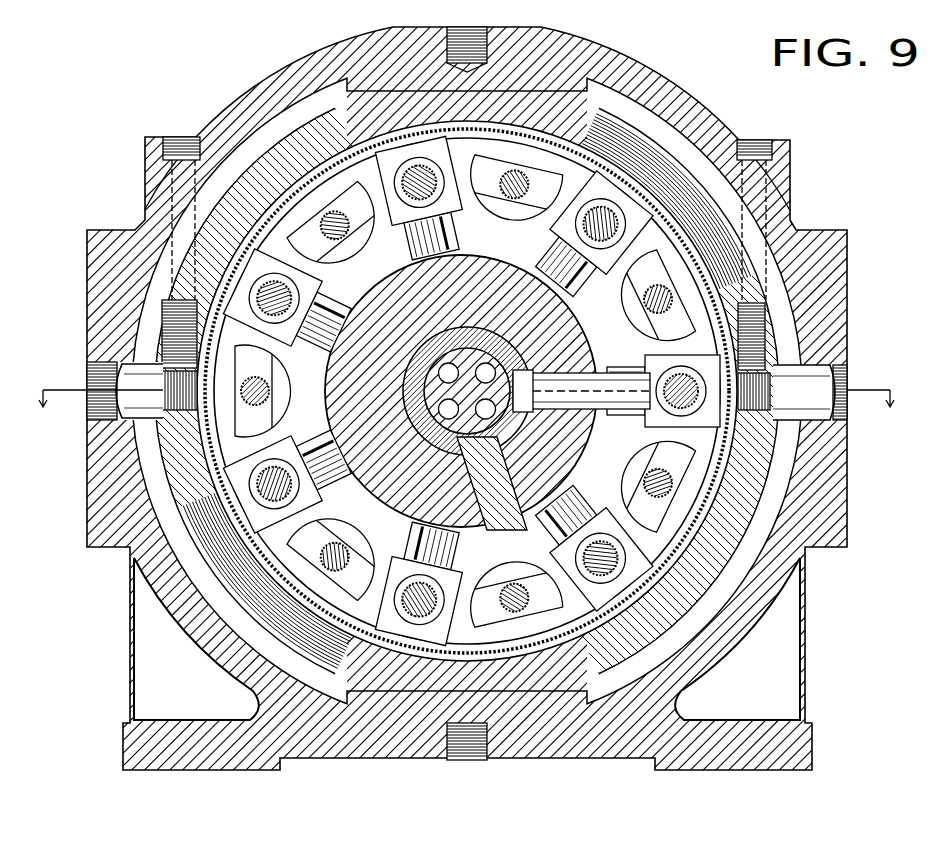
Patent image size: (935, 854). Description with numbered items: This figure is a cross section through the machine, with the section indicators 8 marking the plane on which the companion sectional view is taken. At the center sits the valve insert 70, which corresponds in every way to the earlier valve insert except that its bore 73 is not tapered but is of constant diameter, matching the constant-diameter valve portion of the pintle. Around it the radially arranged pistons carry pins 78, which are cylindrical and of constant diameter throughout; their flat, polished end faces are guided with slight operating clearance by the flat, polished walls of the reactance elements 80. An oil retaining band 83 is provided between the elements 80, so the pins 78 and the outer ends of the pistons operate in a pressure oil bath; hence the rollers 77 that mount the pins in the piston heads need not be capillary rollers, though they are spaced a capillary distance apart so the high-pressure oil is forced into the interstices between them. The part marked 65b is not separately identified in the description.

The oil retaining band 83 is at (592, 172).
The reactance elements 80 is at (612, 192).
The pins 78 is at (630, 214).
The rollers 77 is at (648, 222).
The valve insert 70 is at (581, 391).
The bore 73 is at (498, 505).
The rotor spider 65b is at (478, 522).
The section line 8- 8 is at (466, 413).